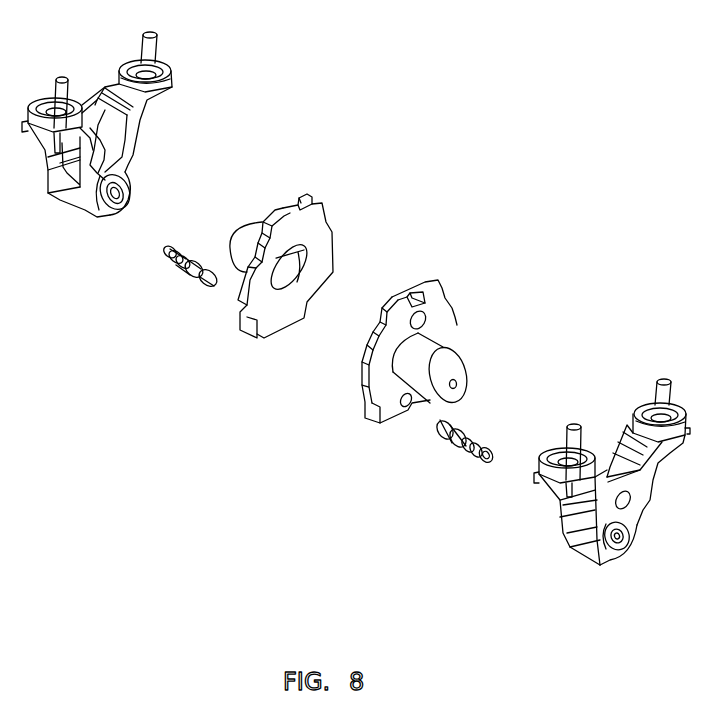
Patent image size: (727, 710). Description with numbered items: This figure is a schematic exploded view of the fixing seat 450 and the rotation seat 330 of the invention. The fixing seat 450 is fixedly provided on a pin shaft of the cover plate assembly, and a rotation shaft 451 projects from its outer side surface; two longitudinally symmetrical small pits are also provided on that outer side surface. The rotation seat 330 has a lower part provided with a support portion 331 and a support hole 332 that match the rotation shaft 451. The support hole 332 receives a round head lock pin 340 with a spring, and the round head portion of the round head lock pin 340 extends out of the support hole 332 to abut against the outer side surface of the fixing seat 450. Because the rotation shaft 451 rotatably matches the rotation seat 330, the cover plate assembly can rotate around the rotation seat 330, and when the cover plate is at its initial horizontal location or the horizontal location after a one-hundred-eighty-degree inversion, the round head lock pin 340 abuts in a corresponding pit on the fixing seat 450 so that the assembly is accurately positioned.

The rotation seat 330 is at (158, 90).
The support portion 331 is at (105, 152).
The support hole 332 is at (110, 212).
The round head lock pin 340 is at (183, 265).
The fixing seat 450 is at (365, 390).
The rotation shaft 451 is at (422, 353).